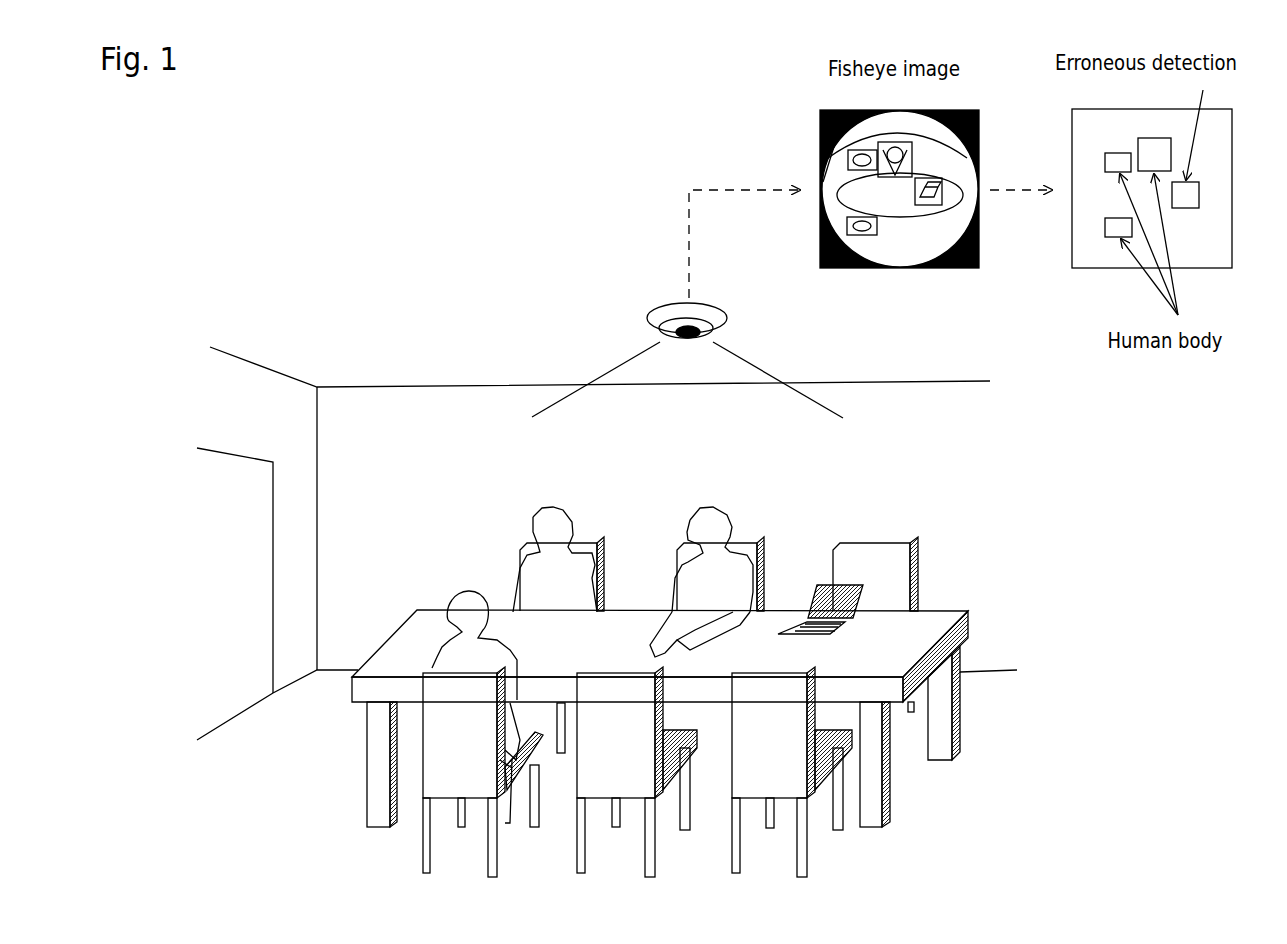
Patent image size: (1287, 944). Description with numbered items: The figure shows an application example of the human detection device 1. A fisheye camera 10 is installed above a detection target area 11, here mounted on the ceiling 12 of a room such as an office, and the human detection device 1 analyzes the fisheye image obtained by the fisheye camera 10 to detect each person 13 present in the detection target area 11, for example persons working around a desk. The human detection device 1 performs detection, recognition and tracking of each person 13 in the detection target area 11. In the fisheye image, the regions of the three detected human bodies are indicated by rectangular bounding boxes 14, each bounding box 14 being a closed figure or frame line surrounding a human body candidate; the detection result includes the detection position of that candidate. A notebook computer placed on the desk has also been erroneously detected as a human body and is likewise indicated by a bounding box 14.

The human detection device 1 is at (687, 370).
The fisheye camera 10 is at (687, 343).
The detection target area 11 is at (352, 878).
The ceiling 12 is at (478, 309).
The person 13 is at (462, 600).
The bounding box 14 is at (848, 160).